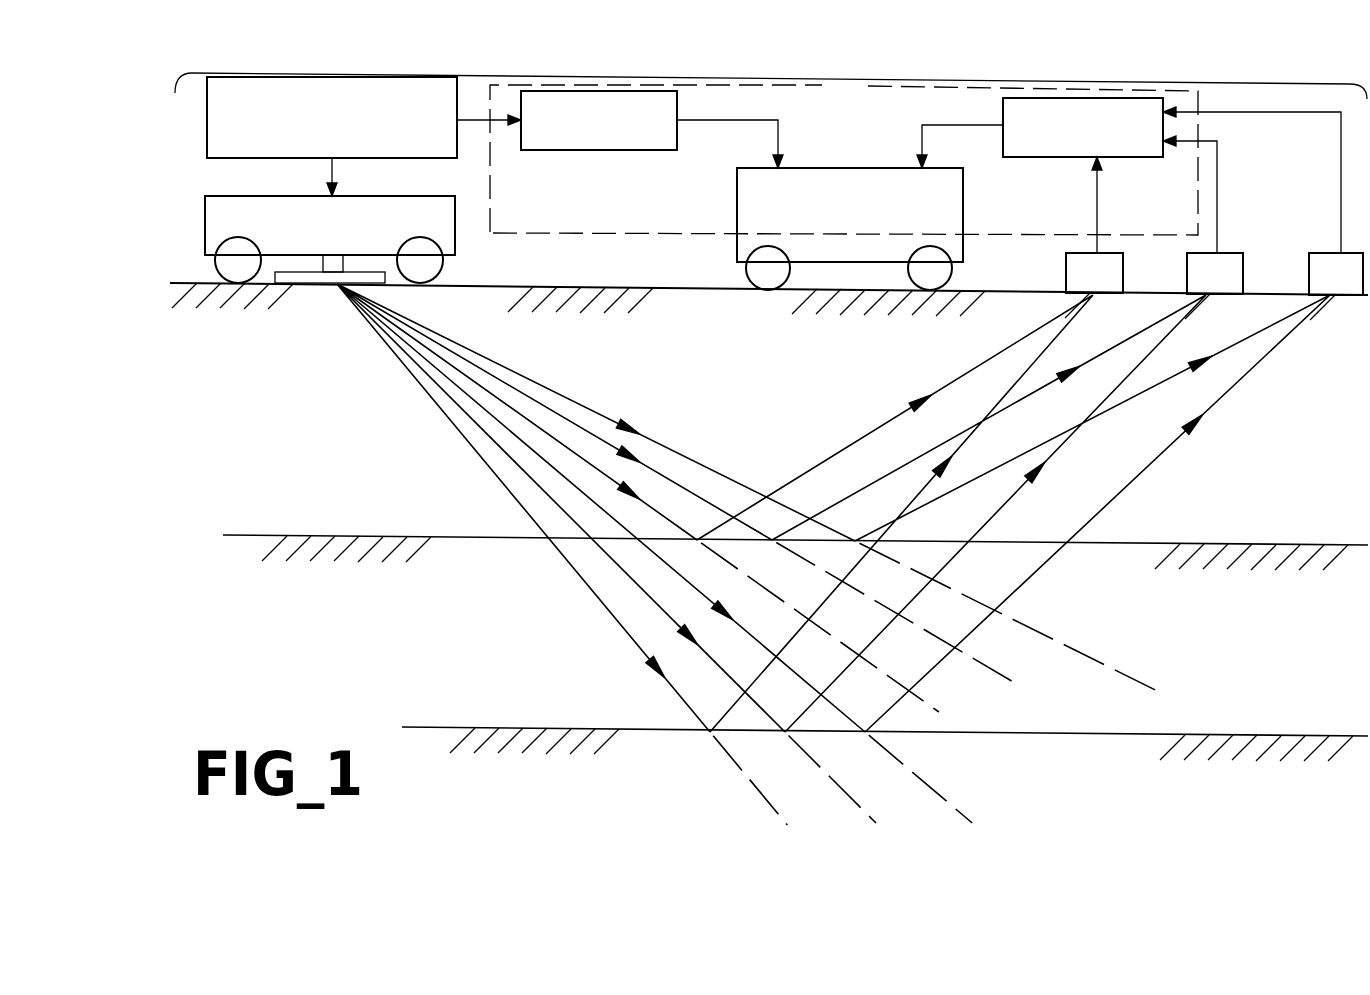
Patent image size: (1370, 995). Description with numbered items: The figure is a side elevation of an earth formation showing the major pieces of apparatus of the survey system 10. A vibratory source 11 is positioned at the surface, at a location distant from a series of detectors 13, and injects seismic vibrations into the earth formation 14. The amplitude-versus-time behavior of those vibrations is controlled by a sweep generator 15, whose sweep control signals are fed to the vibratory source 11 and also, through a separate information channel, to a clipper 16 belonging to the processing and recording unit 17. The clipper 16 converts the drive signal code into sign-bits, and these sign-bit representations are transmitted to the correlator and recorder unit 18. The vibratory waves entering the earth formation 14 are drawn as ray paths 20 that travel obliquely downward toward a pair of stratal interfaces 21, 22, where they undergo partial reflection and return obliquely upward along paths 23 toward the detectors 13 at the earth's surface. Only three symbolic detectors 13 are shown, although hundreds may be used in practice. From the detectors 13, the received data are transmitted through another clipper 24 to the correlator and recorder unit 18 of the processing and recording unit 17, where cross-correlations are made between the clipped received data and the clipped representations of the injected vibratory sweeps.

The survey system 10 is at (771, 86).
The vibratory source 11 is at (205, 220).
The detectors 13 is at (1123, 262).
The earth formation 14 is at (277, 432).
The sweep generator 15 is at (207, 120).
The clipper 16 is at (598, 152).
The processing and recording unit 17 is at (625, 233).
The correlator and recorder unit 18 is at (737, 197).
The ray paths 20 is at (530, 398).
The stratal interface 21 is at (462, 535).
The stratal interface 22 is at (570, 727).
The paths 23 is at (1130, 398).
The clipper 24 is at (1063, 159).